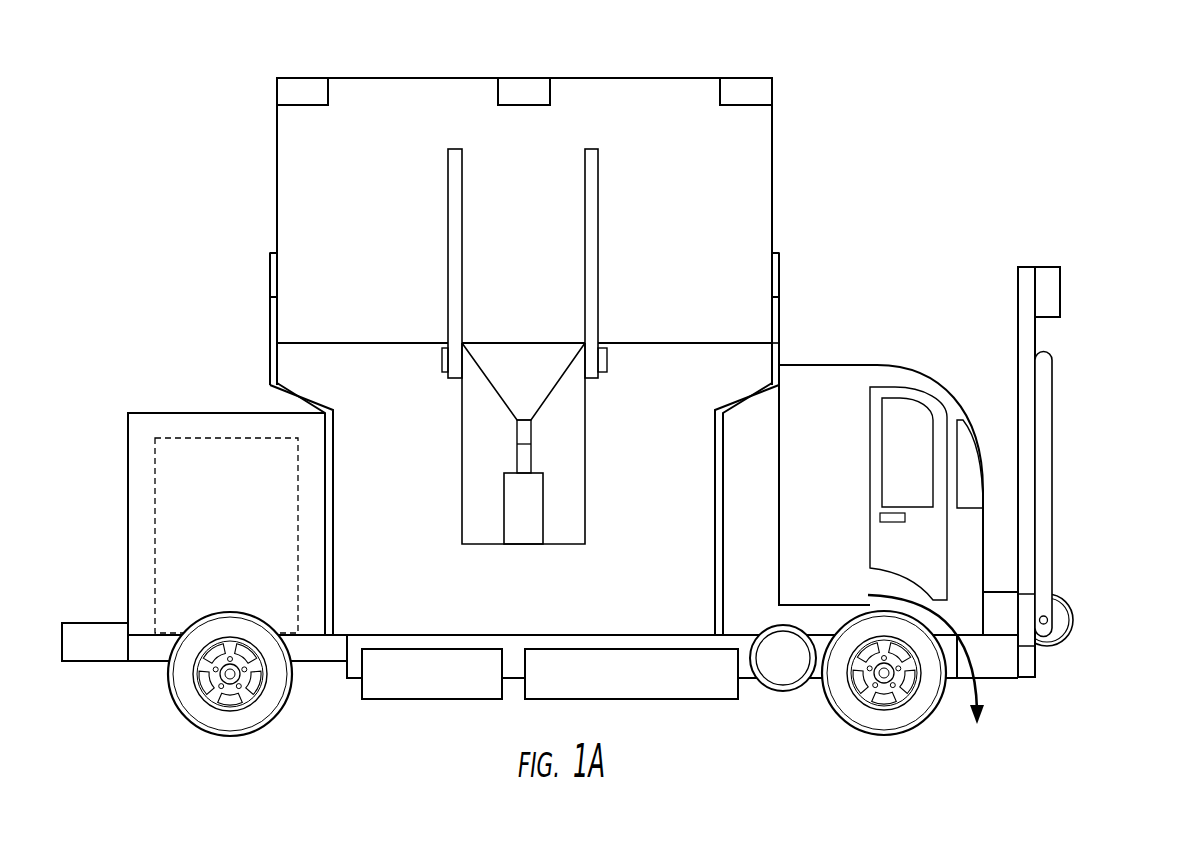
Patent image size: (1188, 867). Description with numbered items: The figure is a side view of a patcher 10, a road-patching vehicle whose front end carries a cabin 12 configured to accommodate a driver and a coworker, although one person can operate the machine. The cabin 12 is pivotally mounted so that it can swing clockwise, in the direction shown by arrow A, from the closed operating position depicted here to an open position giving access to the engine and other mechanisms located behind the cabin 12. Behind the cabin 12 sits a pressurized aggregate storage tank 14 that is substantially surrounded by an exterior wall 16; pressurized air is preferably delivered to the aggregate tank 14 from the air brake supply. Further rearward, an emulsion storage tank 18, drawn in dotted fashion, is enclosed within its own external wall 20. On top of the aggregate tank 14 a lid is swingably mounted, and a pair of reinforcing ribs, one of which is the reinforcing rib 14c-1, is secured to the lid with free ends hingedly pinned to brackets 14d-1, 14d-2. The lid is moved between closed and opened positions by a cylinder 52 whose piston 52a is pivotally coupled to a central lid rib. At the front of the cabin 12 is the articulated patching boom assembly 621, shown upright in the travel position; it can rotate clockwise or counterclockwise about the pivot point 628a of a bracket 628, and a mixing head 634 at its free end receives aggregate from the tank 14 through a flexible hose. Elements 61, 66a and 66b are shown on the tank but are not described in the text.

The patcher 10 is at (995, 80).
The cabin 12 is at (923, 340).
The aggregate storage tank 14 is at (813, 108).
The reinforcing rib 14c-1 is at (448, 208).
The bracket 14d-1 is at (442, 350).
The bracket 14d-2 is at (598, 208).
The exterior wall 16 is at (430, 470).
The emulsion storage tank 18 is at (183, 438).
The external wall 20 is at (147, 515).
The cylinder 52 is at (532, 518).
The piston 52a is at (525, 453).
The lower hinge 61 is at (779, 325).
The left latch 66a is at (270, 277).
The right latch 66b is at (779, 285).
The articulated patching boom assembly 621 is at (1092, 398).
The bracket 628 is at (1038, 638).
The pivot point 628a is at (1043, 628).
The mixing head 634 is at (1036, 267).
The arrow A is at (977, 658).